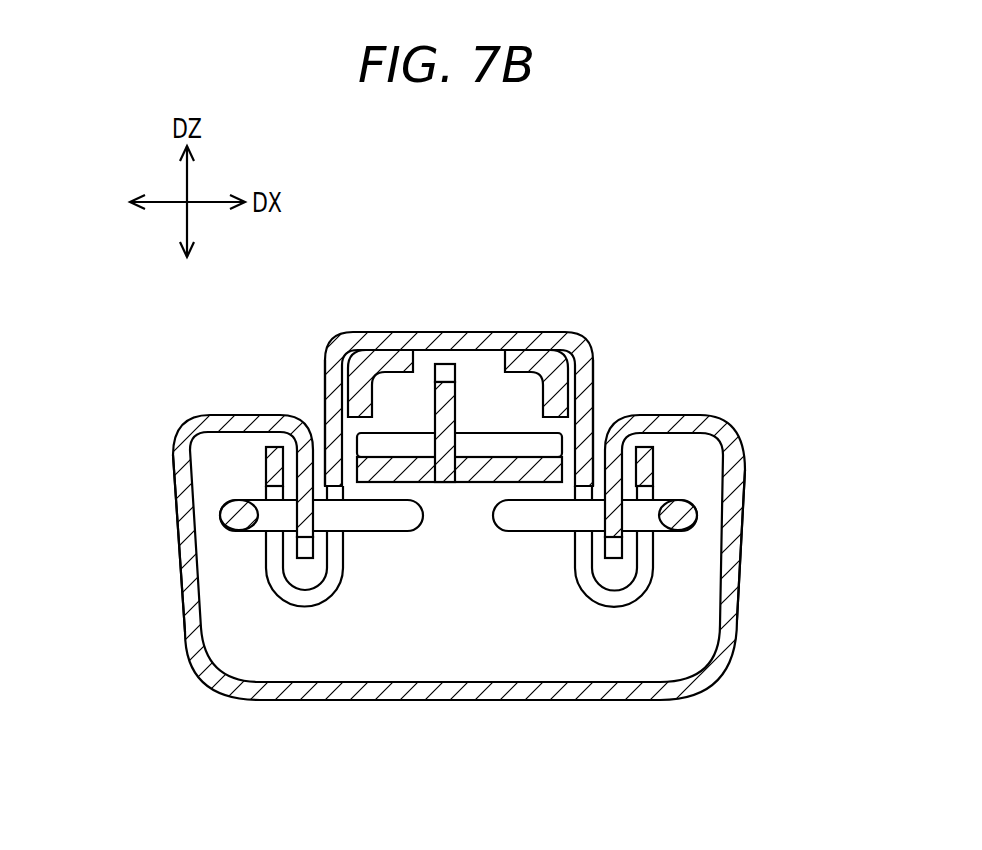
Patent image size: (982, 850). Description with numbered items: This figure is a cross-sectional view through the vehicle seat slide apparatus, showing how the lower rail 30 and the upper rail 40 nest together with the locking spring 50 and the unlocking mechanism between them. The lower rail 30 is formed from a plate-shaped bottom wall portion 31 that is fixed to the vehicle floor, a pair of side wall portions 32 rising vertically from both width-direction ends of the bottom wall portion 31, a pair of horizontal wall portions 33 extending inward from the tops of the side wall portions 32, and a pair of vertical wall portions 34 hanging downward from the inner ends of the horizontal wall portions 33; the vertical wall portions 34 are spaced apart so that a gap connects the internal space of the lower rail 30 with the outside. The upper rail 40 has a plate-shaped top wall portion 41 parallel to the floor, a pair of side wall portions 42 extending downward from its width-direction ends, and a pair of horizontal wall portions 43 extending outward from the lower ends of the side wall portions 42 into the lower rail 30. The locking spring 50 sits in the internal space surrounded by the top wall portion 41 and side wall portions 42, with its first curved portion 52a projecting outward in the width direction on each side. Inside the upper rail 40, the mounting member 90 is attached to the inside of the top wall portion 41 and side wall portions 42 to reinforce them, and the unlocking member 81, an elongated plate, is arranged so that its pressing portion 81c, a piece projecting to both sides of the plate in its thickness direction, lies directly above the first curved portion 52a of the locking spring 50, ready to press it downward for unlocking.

The lower rail 30 is at (530, 702).
The bottom wall portion 31 is at (442, 702).
The side wall portions 32 is at (177, 573).
The horizontal wall portions 33 is at (237, 415).
The vertical wall portions 34 is at (296, 548).
The upper rail 40 is at (548, 331).
The top wall portion 41 is at (512, 331).
The side wall portions 42 is at (324, 388).
The horizontal wall portions 43 is at (305, 608).
The locking spring 50 is at (238, 501).
The first curved portion 52a is at (383, 533).
The unlocking member 81 is at (457, 397).
The pressing portion 81c is at (463, 483).
The mounting member 90 is at (402, 373).